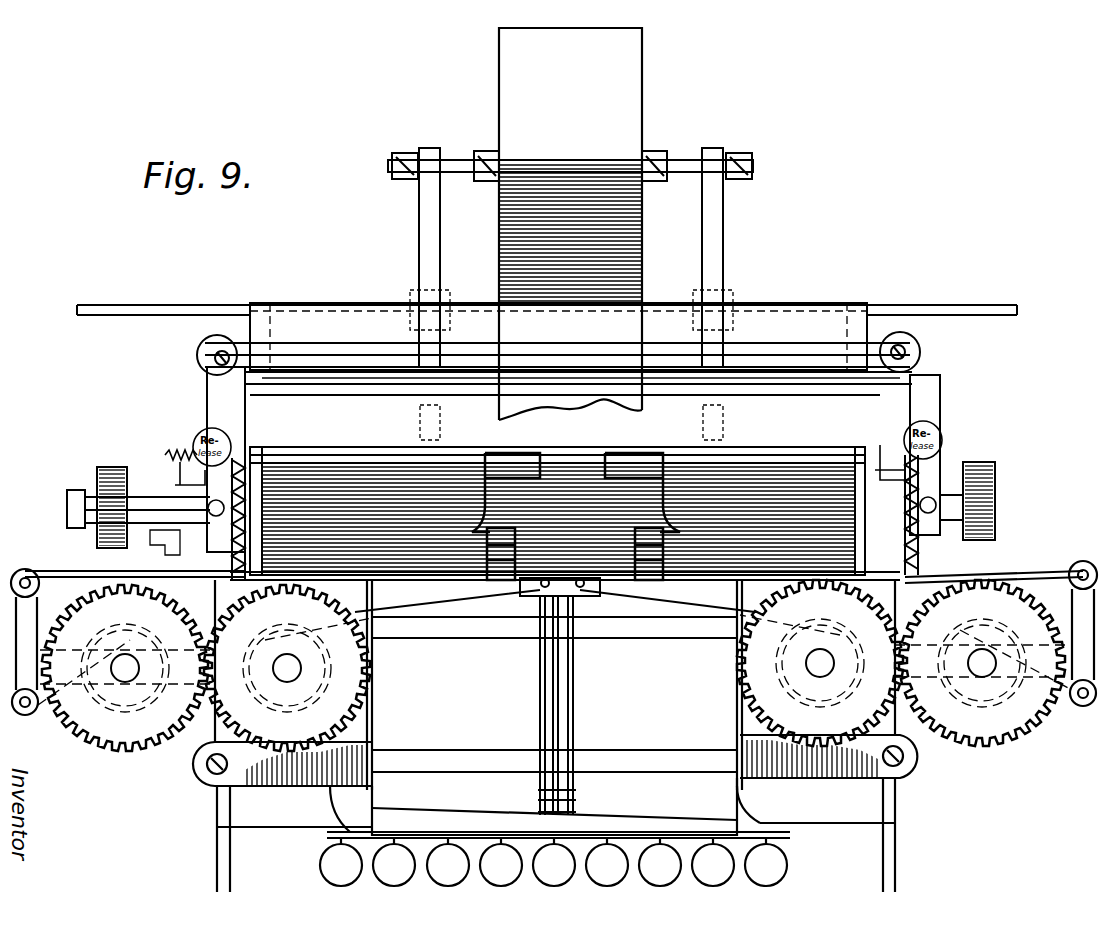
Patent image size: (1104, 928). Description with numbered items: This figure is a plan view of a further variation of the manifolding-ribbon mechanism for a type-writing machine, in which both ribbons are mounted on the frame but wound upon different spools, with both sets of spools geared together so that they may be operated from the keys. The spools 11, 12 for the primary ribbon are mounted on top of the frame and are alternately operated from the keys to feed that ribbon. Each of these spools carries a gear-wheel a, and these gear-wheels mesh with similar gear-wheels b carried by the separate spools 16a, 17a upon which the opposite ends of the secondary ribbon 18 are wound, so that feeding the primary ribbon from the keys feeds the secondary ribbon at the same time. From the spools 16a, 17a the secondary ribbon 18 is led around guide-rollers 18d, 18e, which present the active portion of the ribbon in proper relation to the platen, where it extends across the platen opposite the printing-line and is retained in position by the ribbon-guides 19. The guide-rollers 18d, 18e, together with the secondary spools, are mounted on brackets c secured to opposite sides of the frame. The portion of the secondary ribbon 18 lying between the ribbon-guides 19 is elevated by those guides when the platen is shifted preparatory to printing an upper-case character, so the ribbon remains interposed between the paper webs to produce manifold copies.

The gear-wheel a is at (553, 665).
The gear-wheel b is at (553, 665).
The bracket c is at (555, 639).
The ribbon-spool 11 is at (322, 676).
The ribbon-spool 12 is at (846, 676).
The spool 16a is at (160, 670).
The spool 17a is at (1000, 672).
The secondary ribbon 18 is at (988, 572).
The guide-roller 18d is at (1070, 708).
The guide-roller 18e is at (552, 566).
The ribbon-guide 19 is at (913, 578).